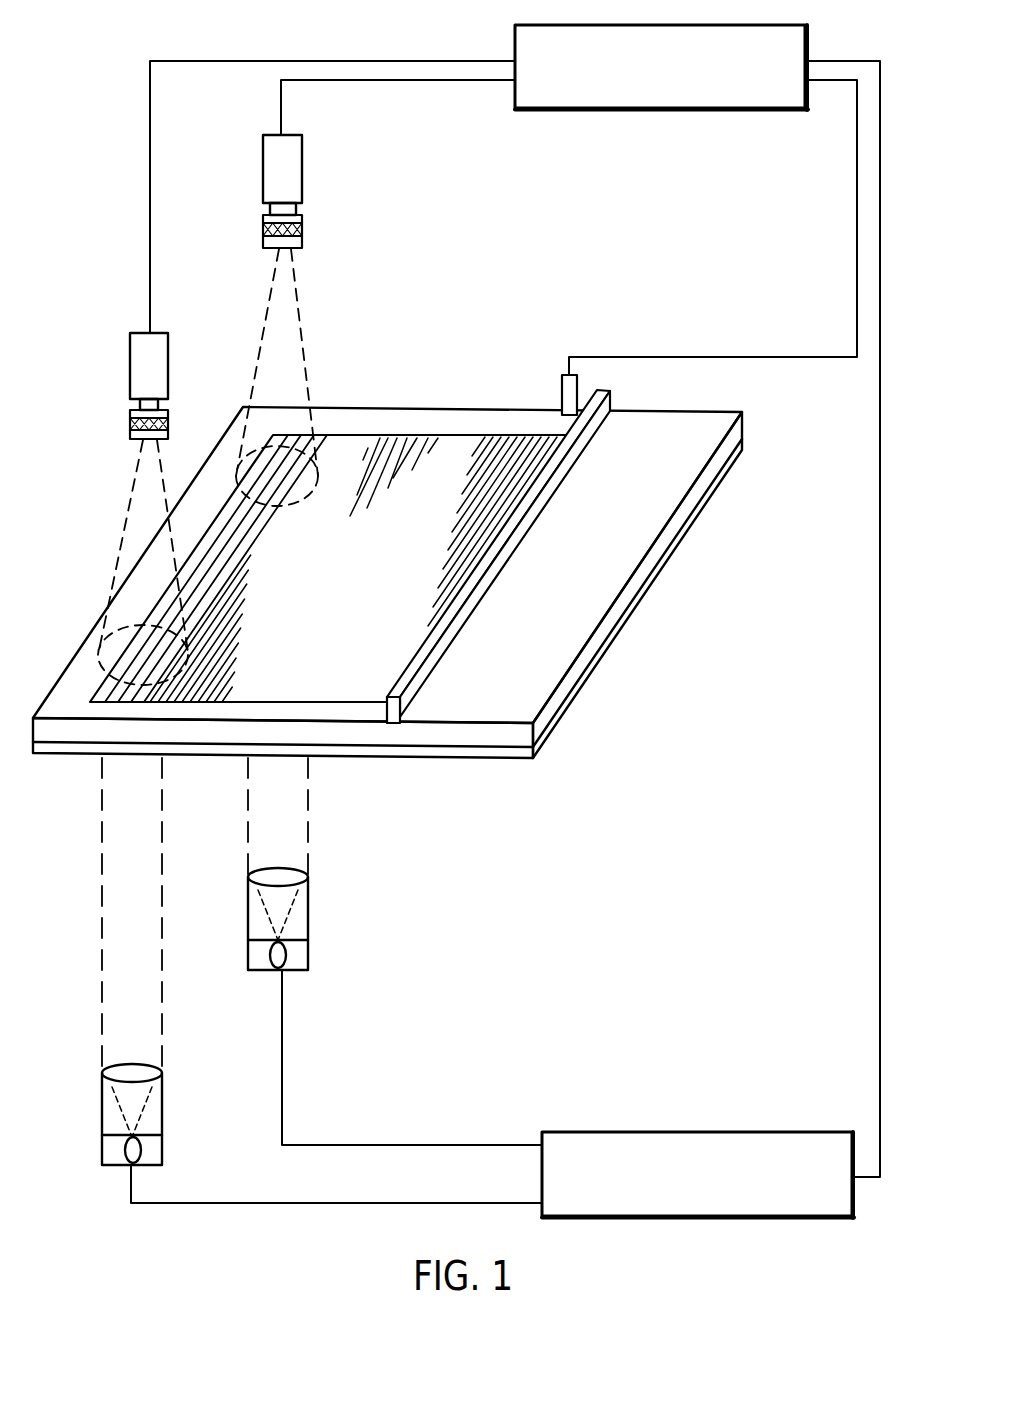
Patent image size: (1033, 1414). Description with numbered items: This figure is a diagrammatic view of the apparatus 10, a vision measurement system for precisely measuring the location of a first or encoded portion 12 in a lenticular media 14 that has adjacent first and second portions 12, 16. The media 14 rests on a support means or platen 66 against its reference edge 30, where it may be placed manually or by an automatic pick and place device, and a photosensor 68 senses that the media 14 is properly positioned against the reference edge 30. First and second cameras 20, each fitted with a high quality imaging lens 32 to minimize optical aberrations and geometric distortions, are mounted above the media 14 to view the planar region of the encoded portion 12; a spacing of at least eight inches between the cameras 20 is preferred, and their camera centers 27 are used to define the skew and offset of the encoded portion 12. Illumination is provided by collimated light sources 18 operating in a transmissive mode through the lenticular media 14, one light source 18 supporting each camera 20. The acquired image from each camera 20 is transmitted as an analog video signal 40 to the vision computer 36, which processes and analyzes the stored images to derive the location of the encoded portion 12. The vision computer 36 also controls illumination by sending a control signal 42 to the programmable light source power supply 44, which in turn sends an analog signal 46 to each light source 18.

The apparatus 10 is at (703, 915).
The first portion 12 is at (306, 434).
The lenticular media 14 is at (193, 548).
The second portion 16 is at (400, 433).
The light source 18 is at (162, 1107).
The camera 20 is at (302, 169).
The camera center 27 is at (273, 478).
The reference edge 30 is at (396, 708).
The imaging lens 32 is at (302, 230).
The vision computer 36 is at (643, 113).
The analog video signal 40 is at (226, 62).
The control signal 42 is at (880, 637).
The light source power supply 44 is at (693, 1130).
The analog signal 46 is at (437, 1143).
The platen 66 is at (630, 543).
The photosensor 68 is at (562, 382).